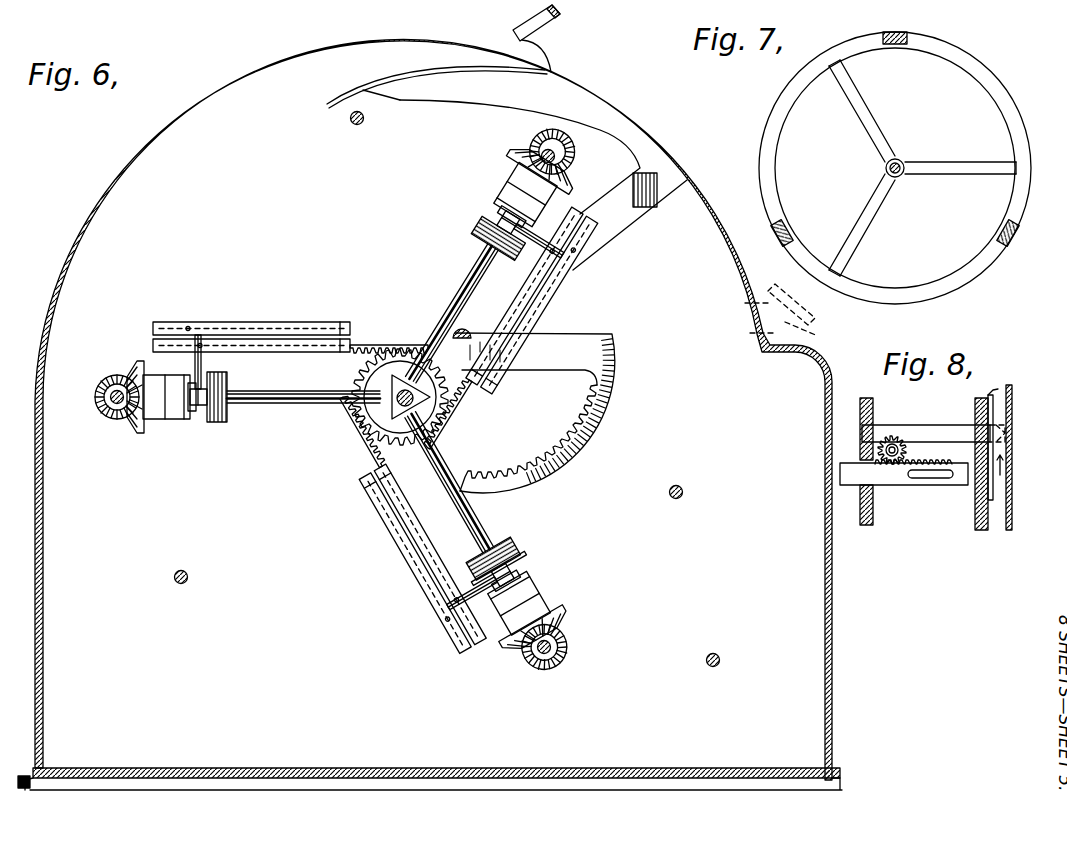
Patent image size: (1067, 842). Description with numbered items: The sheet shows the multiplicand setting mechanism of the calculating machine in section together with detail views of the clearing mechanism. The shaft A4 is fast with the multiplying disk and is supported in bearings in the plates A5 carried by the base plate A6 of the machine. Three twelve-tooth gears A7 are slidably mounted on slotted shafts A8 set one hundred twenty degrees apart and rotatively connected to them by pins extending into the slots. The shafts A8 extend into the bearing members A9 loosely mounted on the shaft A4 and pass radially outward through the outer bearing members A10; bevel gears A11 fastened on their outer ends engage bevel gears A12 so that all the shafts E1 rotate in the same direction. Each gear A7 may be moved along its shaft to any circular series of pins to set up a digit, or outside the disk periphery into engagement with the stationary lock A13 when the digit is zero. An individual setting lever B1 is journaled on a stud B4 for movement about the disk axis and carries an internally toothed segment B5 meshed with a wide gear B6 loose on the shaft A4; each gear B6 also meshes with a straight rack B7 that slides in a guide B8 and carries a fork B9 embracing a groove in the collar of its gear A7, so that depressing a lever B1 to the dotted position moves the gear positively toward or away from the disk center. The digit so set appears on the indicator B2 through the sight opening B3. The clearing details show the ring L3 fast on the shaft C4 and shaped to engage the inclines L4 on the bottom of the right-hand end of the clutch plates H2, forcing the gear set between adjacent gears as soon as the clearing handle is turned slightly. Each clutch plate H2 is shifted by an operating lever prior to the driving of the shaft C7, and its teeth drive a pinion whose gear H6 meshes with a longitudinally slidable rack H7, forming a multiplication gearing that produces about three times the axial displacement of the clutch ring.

In FIG. 6, the shaft A4 is at (405, 394).
In FIG. 8, the plates A5 is at (975, 511).
In FIG. 6, the base plate A6 is at (316, 768).
In FIG. 6, the twelve-tooth gear A7 is at (220, 420).
In FIG. 6, the slotted shaft A8 is at (306, 402).
In FIG. 6, the bearing member A9 is at (415, 400).
In FIG. 6, the outer bearing member A10 is at (181, 413).
In FIG. 6, the bevel gear A11 is at (137, 421).
In FIG. 6, the bevel gear A12 is at (118, 376).
In FIG. 6, the stationary lock A13 is at (522, 552).
In FIG. 6, the setting lever B1 is at (548, 43).
In FIG. 6, the indicator B2 is at (413, 76).
In FIG. 6, the sight opening B3 is at (668, 147).
In FIG. 6, the stud B4 is at (462, 338).
In FIG. 6, the internally toothed segment B5 is at (550, 438).
In FIG. 6, the wide gear B6 is at (366, 361).
In FIG. 6, the straight rack B7 is at (387, 332).
In FIG. 6, the guide B8 is at (246, 323).
In FIG. 6, the fork B9 is at (197, 361).
In FIG. 7, the shaft C4 is at (901, 163).
In FIG. 6, the shaft C7 is at (720, 660).
In FIG. 6, the shaft E1 is at (352, 123).
In FIG. 7, the clutch plate H2 is at (890, 34).
In FIG. 8, the clutch plate H2 is at (930, 429).
In FIG. 8, the gear H6 is at (903, 456).
In FIG. 8, the rack H7 is at (900, 476).
In FIG. 7, the ring L3 is at (1000, 92).
In FIG. 8, the ring L3 is at (986, 392).
In FIG. 7, the inclines L4 is at (878, 44).
In FIG. 8, the inclines L4 is at (986, 441).